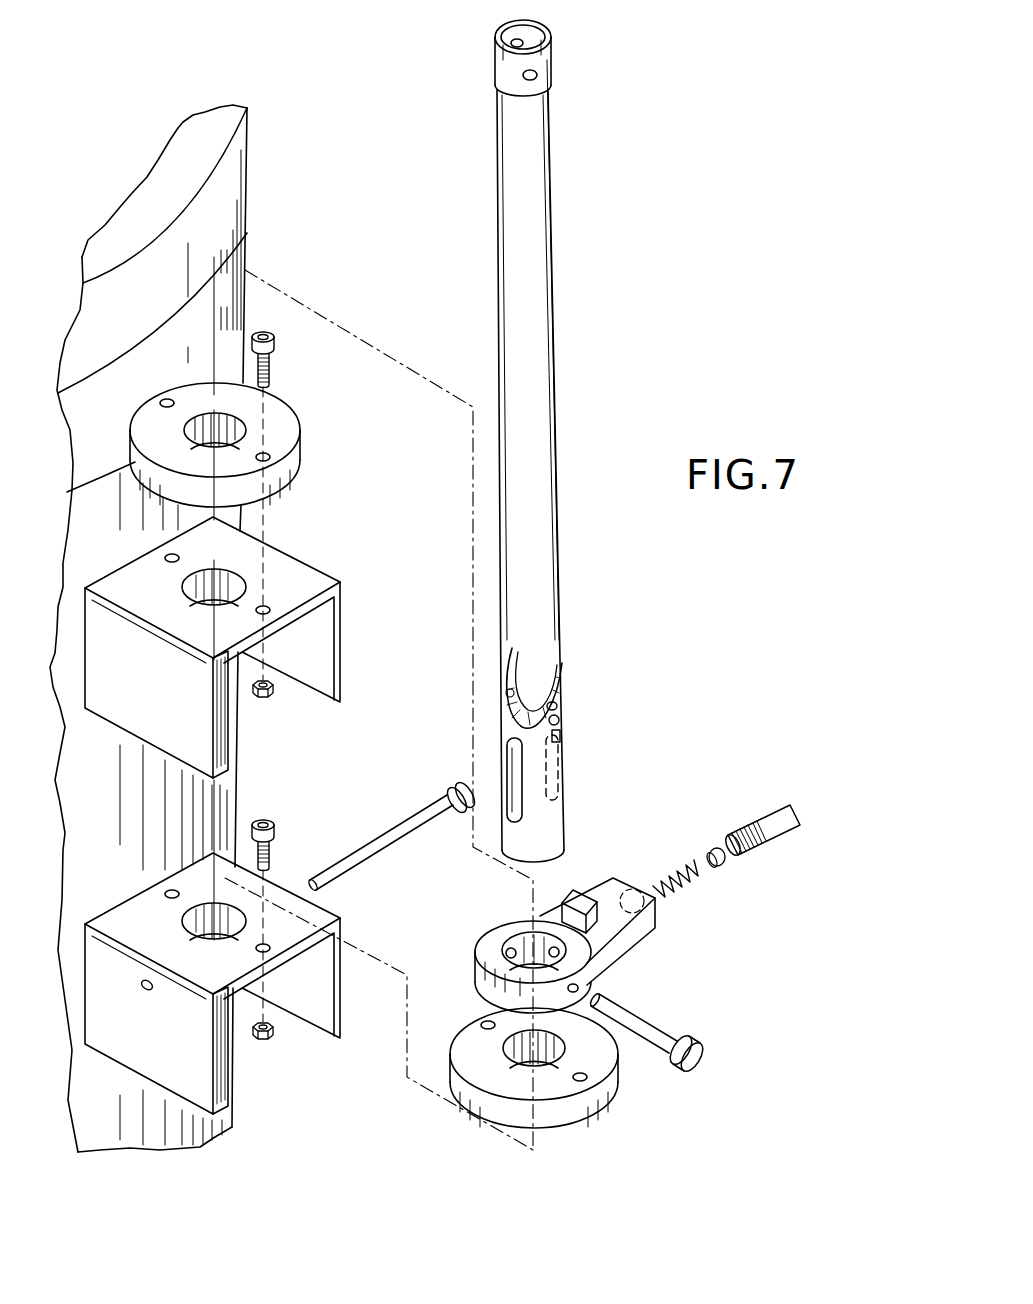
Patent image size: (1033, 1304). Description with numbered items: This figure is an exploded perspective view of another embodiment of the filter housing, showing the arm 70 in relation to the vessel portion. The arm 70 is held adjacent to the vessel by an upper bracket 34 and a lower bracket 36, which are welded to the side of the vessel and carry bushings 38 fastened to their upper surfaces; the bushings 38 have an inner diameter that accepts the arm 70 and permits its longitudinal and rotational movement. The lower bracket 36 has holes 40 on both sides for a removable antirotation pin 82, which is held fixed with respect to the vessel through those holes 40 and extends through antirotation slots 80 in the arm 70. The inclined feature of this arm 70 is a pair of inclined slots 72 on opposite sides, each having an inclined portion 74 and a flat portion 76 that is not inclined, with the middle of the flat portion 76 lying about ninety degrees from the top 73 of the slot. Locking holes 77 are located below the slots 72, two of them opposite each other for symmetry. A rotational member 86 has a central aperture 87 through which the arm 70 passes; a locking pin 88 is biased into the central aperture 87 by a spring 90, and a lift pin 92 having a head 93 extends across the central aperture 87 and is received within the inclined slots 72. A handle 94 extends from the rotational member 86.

The upper bracket 34 is at (118, 707).
The lower bracket 36 is at (327, 1012).
The bushings 38 is at (280, 412).
The holes 40 is at (145, 983).
The arm 70 is at (540, 465).
The inclined slots 72 is at (561, 736).
The top of the inclined slot 73 is at (548, 670).
The inclined portions 74 is at (560, 705).
The flat portions 76 is at (505, 735).
The locking holes 77 is at (561, 722).
The antirotation slots 80 is at (560, 752).
The antirotation pin 82 is at (417, 838).
The rotational member 86 is at (610, 887).
The central aperture 87 is at (515, 933).
The locking pin 88 is at (550, 937).
The spring 90 is at (677, 870).
The lift pin 92 is at (640, 1015).
The head 93 is at (693, 1040).
The handle 94 is at (770, 812).